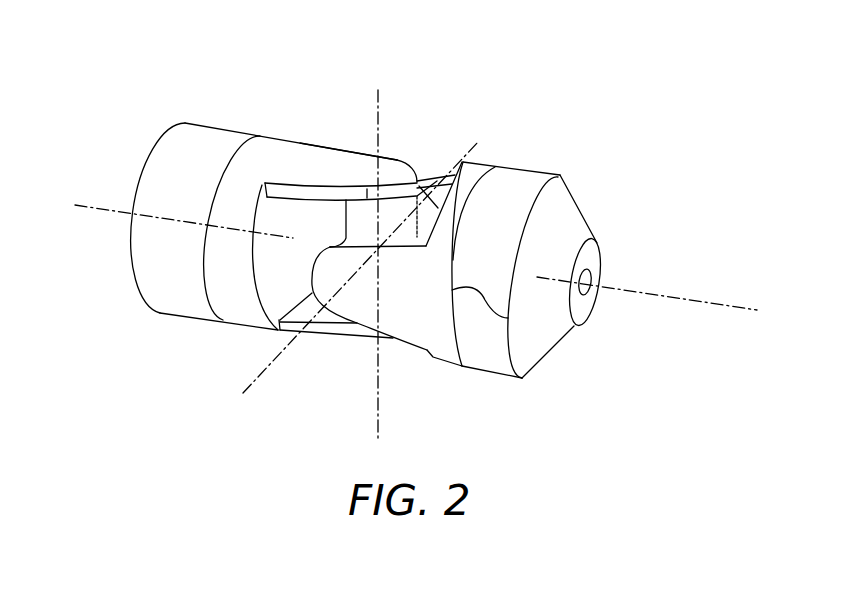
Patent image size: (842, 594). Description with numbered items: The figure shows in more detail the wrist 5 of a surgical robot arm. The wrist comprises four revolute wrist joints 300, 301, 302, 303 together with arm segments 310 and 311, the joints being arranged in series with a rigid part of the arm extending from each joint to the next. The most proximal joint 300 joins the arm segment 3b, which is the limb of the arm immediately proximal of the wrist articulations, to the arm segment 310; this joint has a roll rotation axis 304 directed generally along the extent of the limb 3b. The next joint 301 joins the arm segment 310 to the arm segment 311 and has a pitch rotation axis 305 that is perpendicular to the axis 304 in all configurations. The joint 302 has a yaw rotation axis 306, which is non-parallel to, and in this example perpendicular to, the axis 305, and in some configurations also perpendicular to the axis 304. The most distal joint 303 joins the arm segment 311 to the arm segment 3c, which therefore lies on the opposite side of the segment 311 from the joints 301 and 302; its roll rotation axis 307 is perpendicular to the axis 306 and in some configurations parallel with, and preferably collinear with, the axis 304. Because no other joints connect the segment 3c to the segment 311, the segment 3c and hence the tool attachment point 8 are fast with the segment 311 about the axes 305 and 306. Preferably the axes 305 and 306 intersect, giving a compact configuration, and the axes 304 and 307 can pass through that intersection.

The arm segment 3b is at (185, 132).
The arm segment 3c is at (580, 219).
The wrist 5 is at (407, 353).
The tool attachment point 8 is at (592, 293).
The revolute wrist joint 300 is at (238, 146).
The revolute wrist joint 301 is at (393, 166).
The revolute wrist joint 302 is at (327, 274).
The revolute wrist joint 303 is at (508, 318).
The roll rotation axis 304 is at (82, 205).
The pitch rotation axis 305 is at (378, 430).
The yaw rotation axis 306 is at (253, 385).
The roll rotation axis 307 is at (712, 303).
The arm segment 310 is at (322, 153).
The arm segment 311 is at (446, 360).